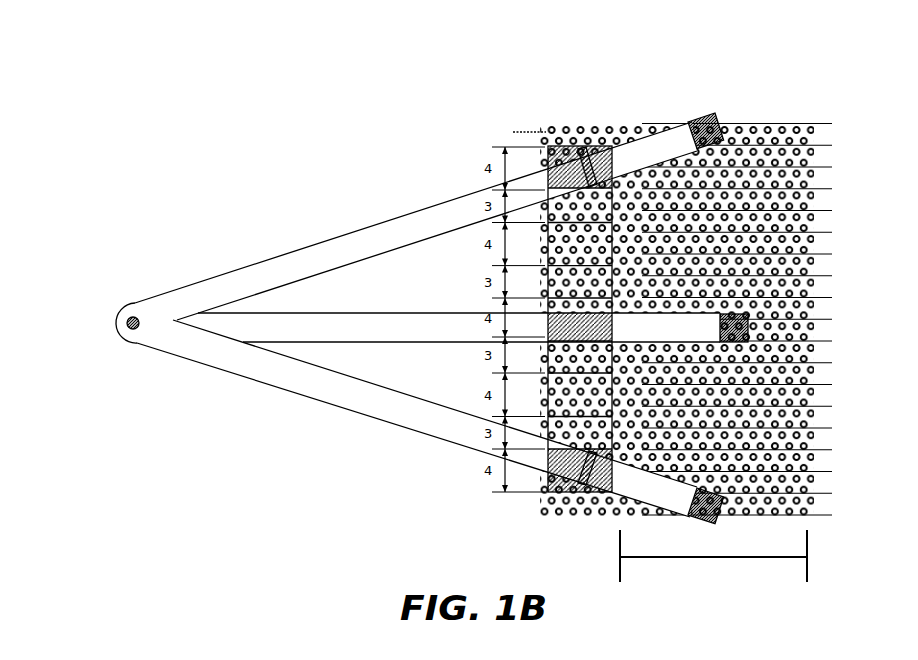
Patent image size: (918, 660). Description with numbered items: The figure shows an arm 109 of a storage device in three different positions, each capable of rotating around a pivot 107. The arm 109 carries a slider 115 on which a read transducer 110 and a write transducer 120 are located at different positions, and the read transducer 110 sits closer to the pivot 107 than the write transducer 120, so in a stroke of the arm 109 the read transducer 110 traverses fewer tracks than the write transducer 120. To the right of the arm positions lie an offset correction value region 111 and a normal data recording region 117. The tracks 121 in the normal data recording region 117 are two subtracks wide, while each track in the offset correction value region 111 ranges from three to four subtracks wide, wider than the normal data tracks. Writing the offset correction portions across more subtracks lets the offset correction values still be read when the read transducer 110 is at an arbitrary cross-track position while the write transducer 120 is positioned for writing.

The pivot 107 is at (135, 315).
The arm 109 is at (248, 268).
The read transducer 110 is at (582, 158).
The offset correction value region 111 is at (612, 116).
The slider 115 is at (625, 92).
The normal data recording region 117 is at (722, 560).
The write transducer 120 is at (710, 112).
The tracks 121 is at (836, 170).